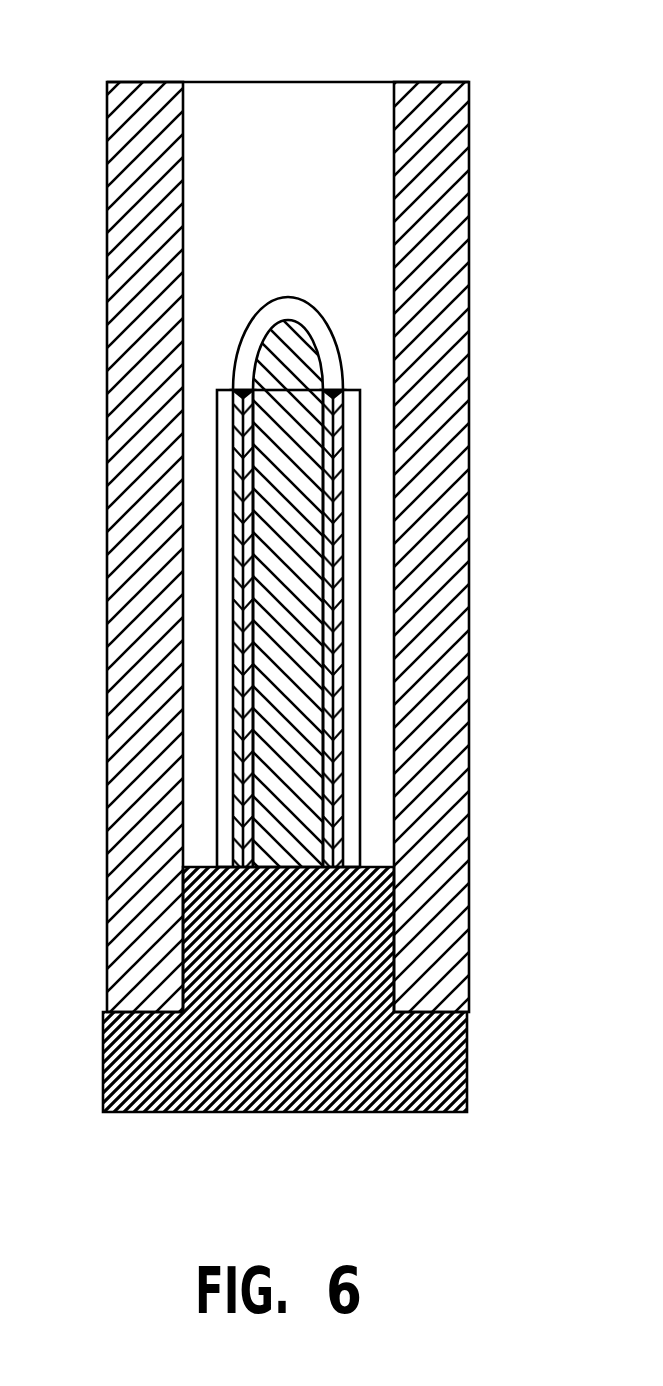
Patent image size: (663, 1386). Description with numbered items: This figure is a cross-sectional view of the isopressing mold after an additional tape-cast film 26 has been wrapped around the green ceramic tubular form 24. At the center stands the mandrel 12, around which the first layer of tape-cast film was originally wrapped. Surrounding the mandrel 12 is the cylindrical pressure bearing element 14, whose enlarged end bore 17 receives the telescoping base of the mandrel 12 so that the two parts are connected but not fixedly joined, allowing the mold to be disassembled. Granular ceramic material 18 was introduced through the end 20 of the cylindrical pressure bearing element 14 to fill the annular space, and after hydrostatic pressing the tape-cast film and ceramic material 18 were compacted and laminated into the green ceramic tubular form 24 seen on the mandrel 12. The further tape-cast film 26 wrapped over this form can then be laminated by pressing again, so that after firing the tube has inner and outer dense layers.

The mandrel 12 is at (340, 454).
The cylindrical pressure bearing element 14 is at (450, 662).
The enlarged end bore 17 is at (203, 867).
The ceramic material 18 is at (340, 350).
The end 20 is at (143, 97).
The green ceramic tubular form 24 is at (297, 276).
The tape-cast film 26 is at (353, 540).